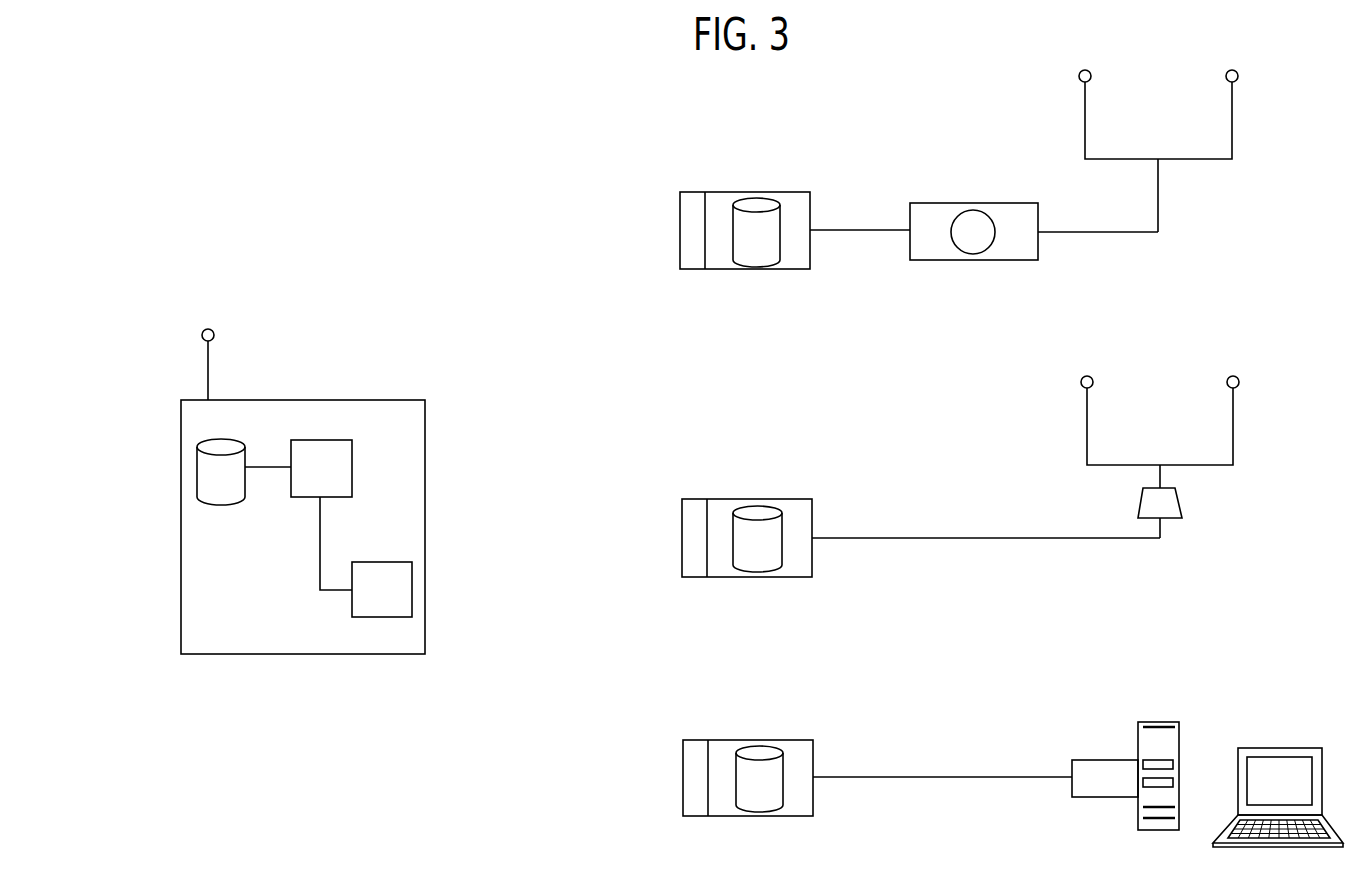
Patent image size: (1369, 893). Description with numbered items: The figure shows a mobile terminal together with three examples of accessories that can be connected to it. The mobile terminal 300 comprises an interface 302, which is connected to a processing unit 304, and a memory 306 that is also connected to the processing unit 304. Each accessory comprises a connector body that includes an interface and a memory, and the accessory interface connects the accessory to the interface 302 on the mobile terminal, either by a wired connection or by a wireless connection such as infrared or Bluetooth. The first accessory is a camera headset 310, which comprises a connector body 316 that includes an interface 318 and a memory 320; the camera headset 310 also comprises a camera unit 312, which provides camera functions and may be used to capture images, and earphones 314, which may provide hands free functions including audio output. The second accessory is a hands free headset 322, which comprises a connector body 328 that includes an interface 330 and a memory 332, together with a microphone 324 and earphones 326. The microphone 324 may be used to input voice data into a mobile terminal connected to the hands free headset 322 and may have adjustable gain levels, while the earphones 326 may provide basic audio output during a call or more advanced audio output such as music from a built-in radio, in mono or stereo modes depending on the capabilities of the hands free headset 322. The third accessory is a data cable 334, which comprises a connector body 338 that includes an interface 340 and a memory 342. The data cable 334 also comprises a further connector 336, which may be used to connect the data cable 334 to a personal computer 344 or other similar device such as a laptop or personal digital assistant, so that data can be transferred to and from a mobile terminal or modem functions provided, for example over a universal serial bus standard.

The mobile terminal 300 is at (303, 481).
The interface 302 is at (388, 562).
The processing unit 304 is at (305, 497).
The memory 306 is at (223, 497).
The camera headset 310 is at (992, 211).
The camera unit 312 is at (940, 260).
The earphones 314 is at (1232, 133).
The connector body 316 is at (727, 227).
The interface 318 is at (697, 253).
The memory 320 is at (750, 250).
The hands free headset 322 is at (963, 516).
The microphone 324 is at (1180, 505).
The earphones 326 is at (1233, 430).
The connector body 328 is at (698, 530).
The interface 330 is at (690, 545).
The memory 332 is at (758, 565).
The data cable 334 is at (959, 773).
The further connector 336 is at (1087, 797).
The connector body 338 is at (694, 816).
The interface 340 is at (700, 800).
The memory 342 is at (760, 800).
The personal computer 344 is at (1274, 753).